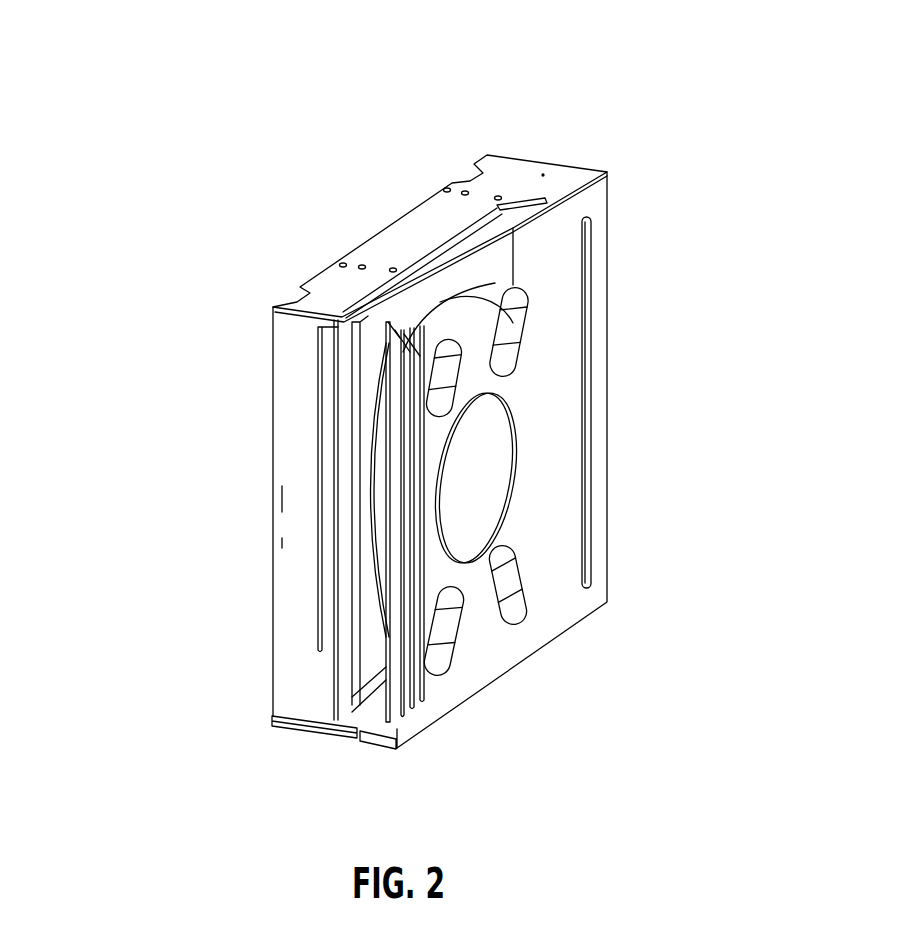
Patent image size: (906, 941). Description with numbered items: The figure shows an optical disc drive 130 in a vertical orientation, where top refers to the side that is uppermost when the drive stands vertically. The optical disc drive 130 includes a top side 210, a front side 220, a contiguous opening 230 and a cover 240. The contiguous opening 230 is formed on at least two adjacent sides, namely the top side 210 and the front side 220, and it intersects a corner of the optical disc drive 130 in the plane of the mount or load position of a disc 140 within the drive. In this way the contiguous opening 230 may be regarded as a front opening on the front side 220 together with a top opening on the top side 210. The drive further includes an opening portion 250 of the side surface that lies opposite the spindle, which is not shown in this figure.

The optical disc drive 130 is at (415, 28).
The top side 210 is at (380, 228).
The front side 220 is at (295, 392).
The contiguous opening 230 is at (473, 268).
The cover 240 is at (558, 178).
The opening portion 250 is at (493, 282).
The disc 140 is at (367, 517).